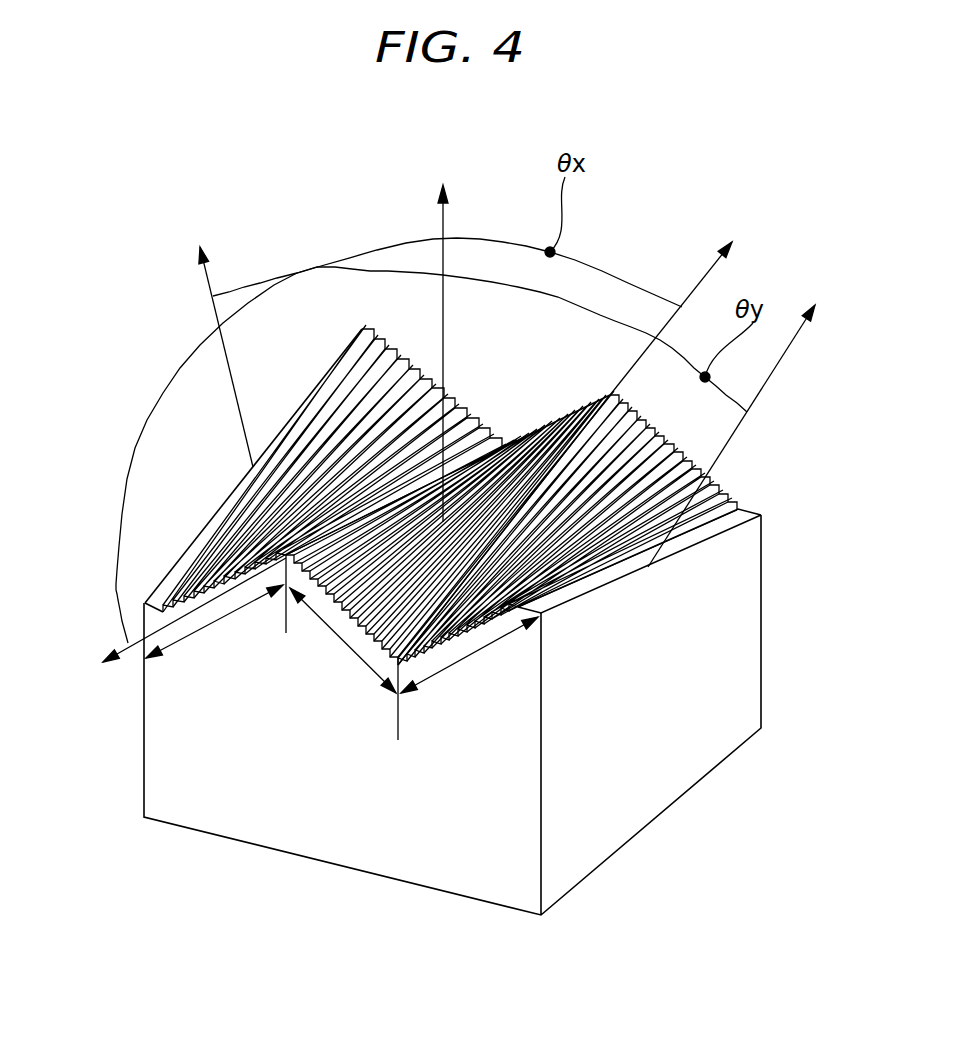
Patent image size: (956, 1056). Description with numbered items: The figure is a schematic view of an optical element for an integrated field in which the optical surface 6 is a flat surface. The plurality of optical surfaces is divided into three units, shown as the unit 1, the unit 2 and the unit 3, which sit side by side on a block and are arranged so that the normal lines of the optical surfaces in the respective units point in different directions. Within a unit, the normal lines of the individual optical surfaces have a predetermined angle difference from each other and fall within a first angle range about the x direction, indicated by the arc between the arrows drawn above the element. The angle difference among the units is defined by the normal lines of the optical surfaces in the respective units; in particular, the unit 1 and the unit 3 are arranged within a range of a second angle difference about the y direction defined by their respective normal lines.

The optical surface 6 is at (405, 568).
The unit 1 is at (213, 625).
The unit 2 is at (340, 640).
The unit 3 is at (470, 657).